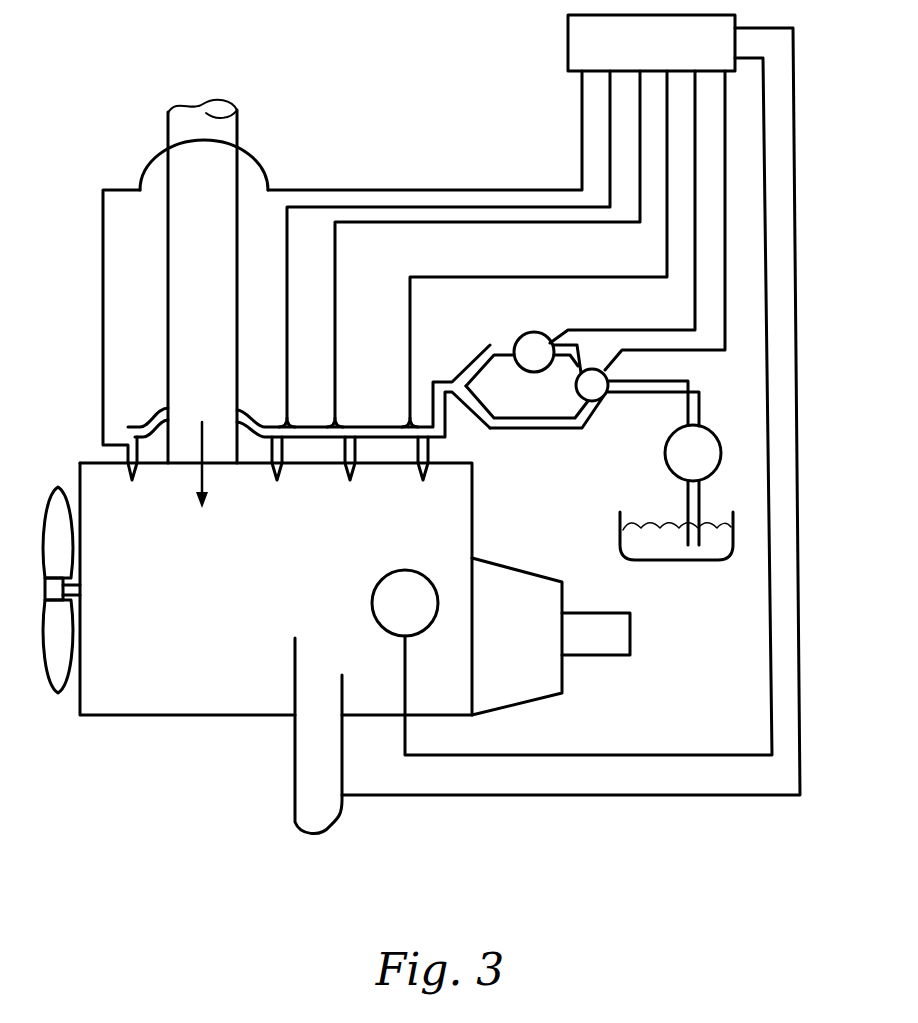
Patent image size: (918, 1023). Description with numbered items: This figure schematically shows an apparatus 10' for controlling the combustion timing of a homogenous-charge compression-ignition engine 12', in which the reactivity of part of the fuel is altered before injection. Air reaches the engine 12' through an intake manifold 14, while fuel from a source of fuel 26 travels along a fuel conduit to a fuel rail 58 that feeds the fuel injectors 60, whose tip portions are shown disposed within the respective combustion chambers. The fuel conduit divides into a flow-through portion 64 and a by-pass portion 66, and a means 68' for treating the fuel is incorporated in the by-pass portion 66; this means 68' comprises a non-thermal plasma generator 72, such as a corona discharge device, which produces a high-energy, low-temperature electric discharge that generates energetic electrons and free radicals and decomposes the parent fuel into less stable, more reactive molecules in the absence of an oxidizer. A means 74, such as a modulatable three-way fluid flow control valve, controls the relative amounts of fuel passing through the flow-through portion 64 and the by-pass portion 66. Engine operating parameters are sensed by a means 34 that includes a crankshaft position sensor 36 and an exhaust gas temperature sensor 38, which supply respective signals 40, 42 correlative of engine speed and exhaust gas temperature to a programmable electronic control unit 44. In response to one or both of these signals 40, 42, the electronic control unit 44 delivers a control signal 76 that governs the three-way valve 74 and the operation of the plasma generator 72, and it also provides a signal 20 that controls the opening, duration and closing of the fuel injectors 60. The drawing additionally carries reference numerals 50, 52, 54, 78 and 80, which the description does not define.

The apparatus for controlling combustion timing 10' is at (228, 233).
The homogenous-charge compression-ignition engine 12' is at (336, 589).
The intake manifold 14 is at (202, 304).
The signal 20 is at (372, 190).
The source of fuel 26 is at (730, 483).
The means for sensing at least one engine operating parameter 34 is at (571, 464).
The crankshaft position sensor 36 is at (405, 603).
The exhaust gas temperature sensor 38 is at (295, 770).
The signal 40 is at (620, 755).
The signal 42 is at (620, 797).
The programmable electronic control unit 44 is at (651, 43).
The fuel line 50 is at (700, 413).
The fuel pump 52 is at (693, 453).
The fuel tank 54 is at (663, 552).
The fuel rail 58 is at (372, 427).
The fuel injectors 60 is at (130, 478).
The flow-through portion 64 is at (545, 430).
The by-pass portion 66 is at (486, 352).
The means incorporated in the by-pass portion 68' is at (542, 384).
The non-thermal plasma generator 72 is at (548, 334).
The modulatable three-way fluid flow control valve 74 is at (601, 402).
The signal 76 is at (725, 292).
The control line 78 is at (697, 185).
The fuel loop 80 is at (520, 440).